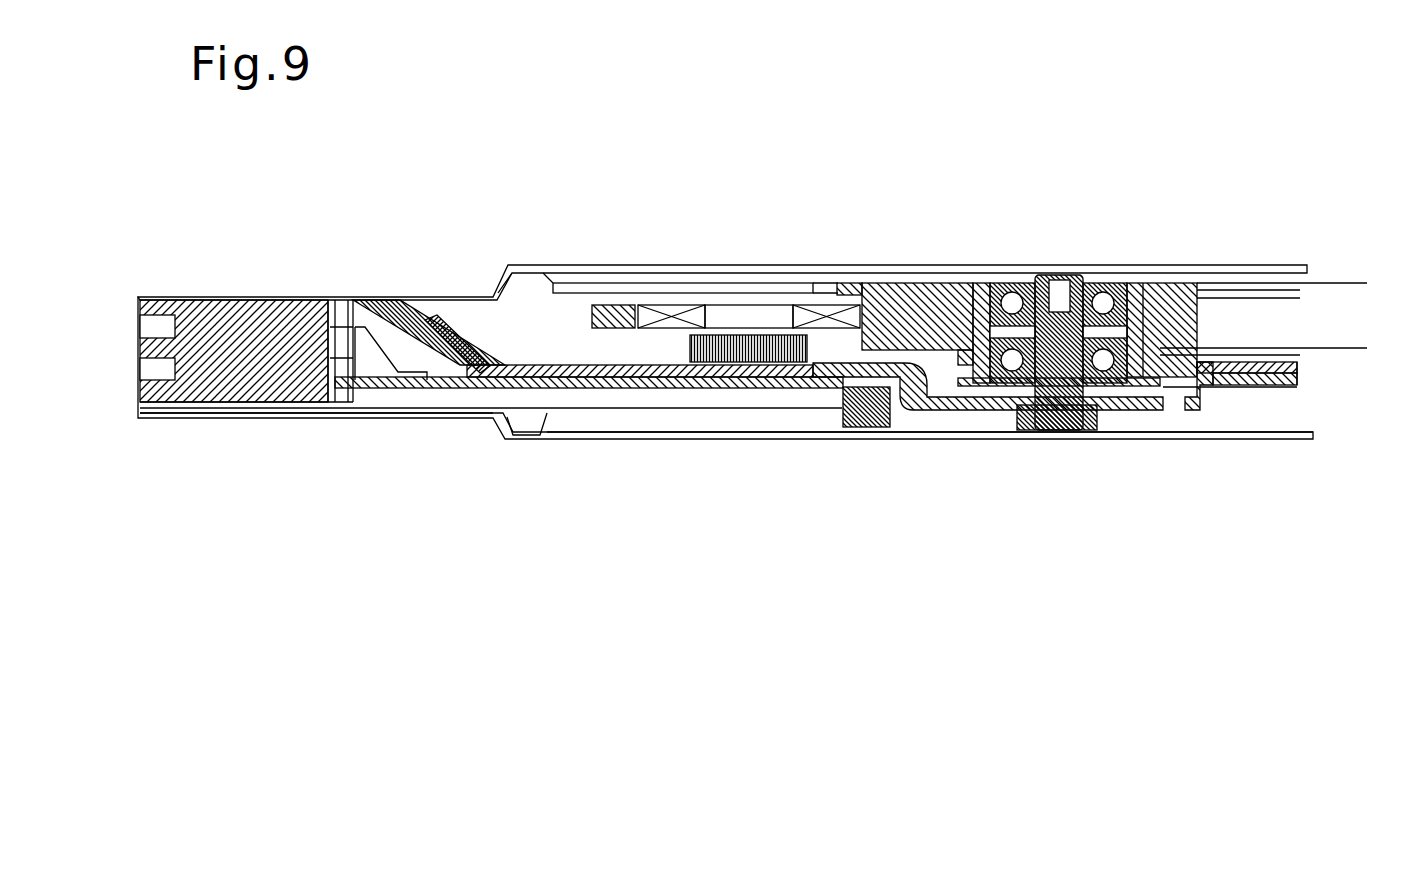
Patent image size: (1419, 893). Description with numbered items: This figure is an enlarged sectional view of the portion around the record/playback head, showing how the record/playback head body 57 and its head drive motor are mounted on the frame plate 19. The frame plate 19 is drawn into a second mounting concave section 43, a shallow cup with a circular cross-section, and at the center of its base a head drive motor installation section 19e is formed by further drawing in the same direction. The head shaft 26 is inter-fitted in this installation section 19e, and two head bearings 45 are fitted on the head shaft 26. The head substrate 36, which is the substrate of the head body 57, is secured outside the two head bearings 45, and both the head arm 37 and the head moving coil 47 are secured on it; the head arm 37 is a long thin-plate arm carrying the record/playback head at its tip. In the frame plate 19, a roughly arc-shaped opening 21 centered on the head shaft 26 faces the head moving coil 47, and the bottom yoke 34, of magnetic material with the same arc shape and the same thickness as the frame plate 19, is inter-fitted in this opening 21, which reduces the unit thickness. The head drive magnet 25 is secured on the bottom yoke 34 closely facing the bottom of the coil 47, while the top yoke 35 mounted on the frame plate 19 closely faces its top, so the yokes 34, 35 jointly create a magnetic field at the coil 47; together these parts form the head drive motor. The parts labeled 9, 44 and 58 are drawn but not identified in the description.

The housing 9 is at (443, 390).
The opening 21 is at (553, 360).
The top yoke 35 is at (565, 290).
The head moving coil 47 is at (695, 308).
The head substrate 36 is at (890, 300).
The record/playback head body 57 is at (922, 214).
The head bearings 45 is at (1017, 287).
The head arm 37 is at (1373, 383).
The bottom yoke 34 is at (590, 380).
The head drive magnet 25 is at (735, 350).
The stopper 58 is at (853, 430).
The head shaft 26 is at (1060, 380).
The flange 44 is at (1062, 400).
The head drive motor installation section 19e is at (1090, 437).
The second mounting concave section 43 is at (1177, 408).
The frame plate 19 is at (1257, 372).